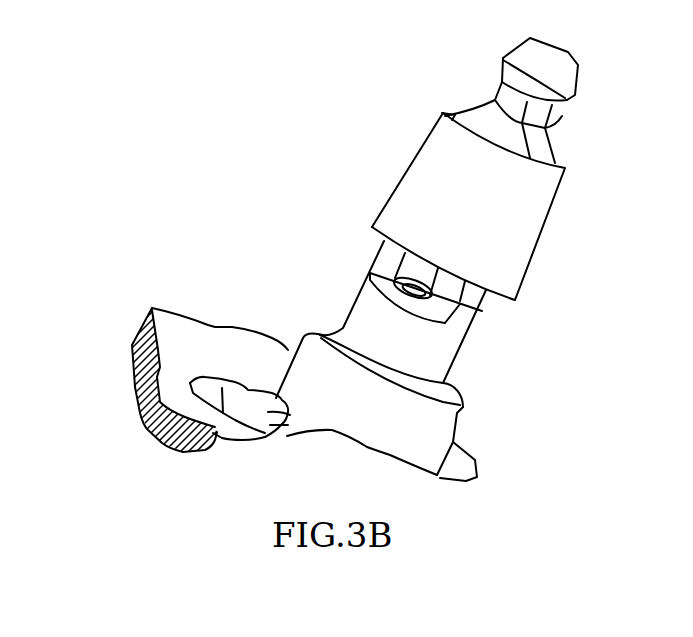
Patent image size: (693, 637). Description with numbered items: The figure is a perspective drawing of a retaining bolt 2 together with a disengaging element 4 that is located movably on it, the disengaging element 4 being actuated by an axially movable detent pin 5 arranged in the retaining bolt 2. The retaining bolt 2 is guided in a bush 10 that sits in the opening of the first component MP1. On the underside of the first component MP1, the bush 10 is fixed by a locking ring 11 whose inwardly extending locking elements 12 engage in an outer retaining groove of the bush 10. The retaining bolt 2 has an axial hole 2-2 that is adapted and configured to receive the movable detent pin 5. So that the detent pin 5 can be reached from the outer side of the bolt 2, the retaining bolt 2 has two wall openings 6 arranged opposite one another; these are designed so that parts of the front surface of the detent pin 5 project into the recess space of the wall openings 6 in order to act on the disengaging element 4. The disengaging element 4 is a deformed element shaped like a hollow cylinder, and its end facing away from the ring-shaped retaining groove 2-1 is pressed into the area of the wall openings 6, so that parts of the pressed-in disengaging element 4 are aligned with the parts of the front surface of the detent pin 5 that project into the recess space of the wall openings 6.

The retaining bolt 2 is at (430, 363).
The ring-shaped retaining groove 2-1 is at (565, 107).
The axial hole 2-2 is at (490, 307).
The disengaging element 4 is at (523, 215).
The detent pin 5 is at (372, 254).
The wall openings 6 is at (372, 273).
The bush 10 is at (368, 422).
The locking ring 11 is at (208, 448).
The locking elements 12 is at (282, 420).
The first component MP1 is at (137, 382).